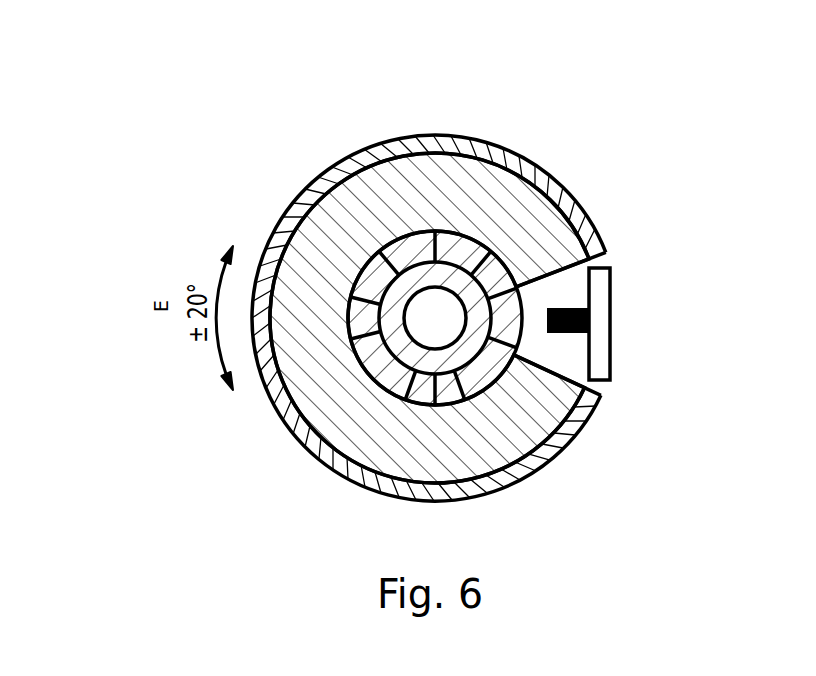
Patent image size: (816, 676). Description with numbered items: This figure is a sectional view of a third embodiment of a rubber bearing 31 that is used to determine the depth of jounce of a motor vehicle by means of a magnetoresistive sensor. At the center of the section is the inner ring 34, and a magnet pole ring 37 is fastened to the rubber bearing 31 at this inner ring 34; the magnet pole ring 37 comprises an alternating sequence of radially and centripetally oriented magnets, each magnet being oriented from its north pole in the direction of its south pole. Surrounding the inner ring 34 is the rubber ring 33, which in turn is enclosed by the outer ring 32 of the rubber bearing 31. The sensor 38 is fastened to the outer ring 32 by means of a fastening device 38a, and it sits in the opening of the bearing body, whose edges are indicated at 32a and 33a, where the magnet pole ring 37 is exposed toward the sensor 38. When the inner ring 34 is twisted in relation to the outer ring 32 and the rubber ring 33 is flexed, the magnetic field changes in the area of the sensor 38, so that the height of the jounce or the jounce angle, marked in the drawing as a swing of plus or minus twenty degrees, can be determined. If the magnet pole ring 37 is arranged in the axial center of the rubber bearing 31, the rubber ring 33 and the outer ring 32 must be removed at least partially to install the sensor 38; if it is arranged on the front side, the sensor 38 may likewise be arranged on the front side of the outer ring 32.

The rubber bearing 31 is at (318, 187).
The outer ring 32 is at (367, 140).
The upper jaw edge 32a is at (610, 253).
The rubber ring 33 is at (448, 192).
The lower jaw edge 33a is at (555, 356).
The inner ring 34 is at (417, 355).
The magnet pole ring 37 is at (373, 277).
The sensor 38 is at (591, 304).
The fastening device 38a is at (594, 357).